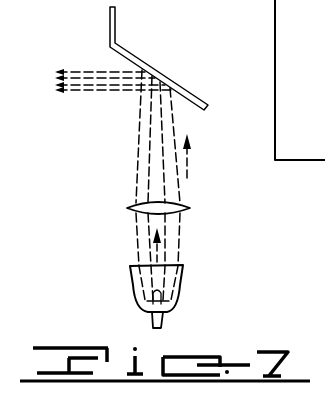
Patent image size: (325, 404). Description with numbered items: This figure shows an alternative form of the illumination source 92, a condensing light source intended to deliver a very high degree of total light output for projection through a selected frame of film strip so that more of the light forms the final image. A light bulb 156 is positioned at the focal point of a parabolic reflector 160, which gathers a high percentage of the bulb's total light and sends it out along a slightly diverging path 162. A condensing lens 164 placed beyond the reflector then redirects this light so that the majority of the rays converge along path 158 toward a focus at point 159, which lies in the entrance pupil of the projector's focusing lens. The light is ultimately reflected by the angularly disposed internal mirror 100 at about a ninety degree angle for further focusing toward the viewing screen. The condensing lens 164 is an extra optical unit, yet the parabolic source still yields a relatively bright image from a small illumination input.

The illumination source 92 is at (120, 287).
The internal mirror 100 is at (140, 58).
The light bulb 156 is at (161, 300).
The path 158 is at (188, 152).
The point 159 is at (163, 125).
The parabolic reflector 160 is at (183, 272).
The slightly diverging path 162 is at (160, 249).
The condensing lens 164 is at (187, 204).